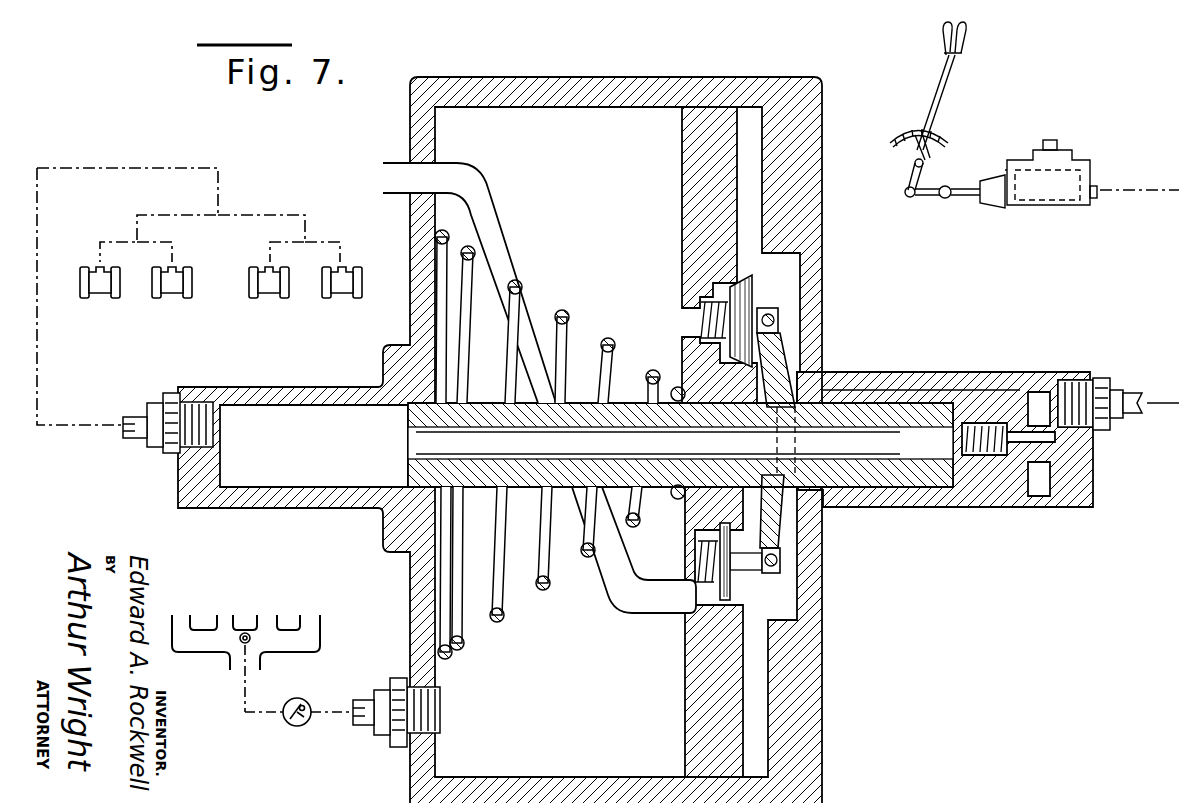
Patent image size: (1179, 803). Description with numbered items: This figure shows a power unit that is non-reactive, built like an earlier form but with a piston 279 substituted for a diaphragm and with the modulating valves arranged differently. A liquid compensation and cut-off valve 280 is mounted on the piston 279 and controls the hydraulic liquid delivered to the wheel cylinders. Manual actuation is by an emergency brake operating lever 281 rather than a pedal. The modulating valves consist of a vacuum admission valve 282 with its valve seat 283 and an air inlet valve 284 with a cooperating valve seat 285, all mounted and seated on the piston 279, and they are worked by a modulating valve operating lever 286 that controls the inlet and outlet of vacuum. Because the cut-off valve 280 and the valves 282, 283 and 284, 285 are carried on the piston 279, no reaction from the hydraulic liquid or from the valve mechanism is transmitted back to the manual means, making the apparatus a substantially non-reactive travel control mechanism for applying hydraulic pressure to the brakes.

The piston 279 is at (700, 165).
The liquid compensation and cut-off valve 280 is at (1005, 455).
The emergency brake operating lever 281 is at (942, 92).
The vacuum admission valve 282 is at (748, 293).
The valve seat 283 is at (735, 368).
The air inlet valve 284 is at (717, 590).
The valve seat 285 is at (735, 533).
The modulating valve operating lever 286 is at (775, 368).